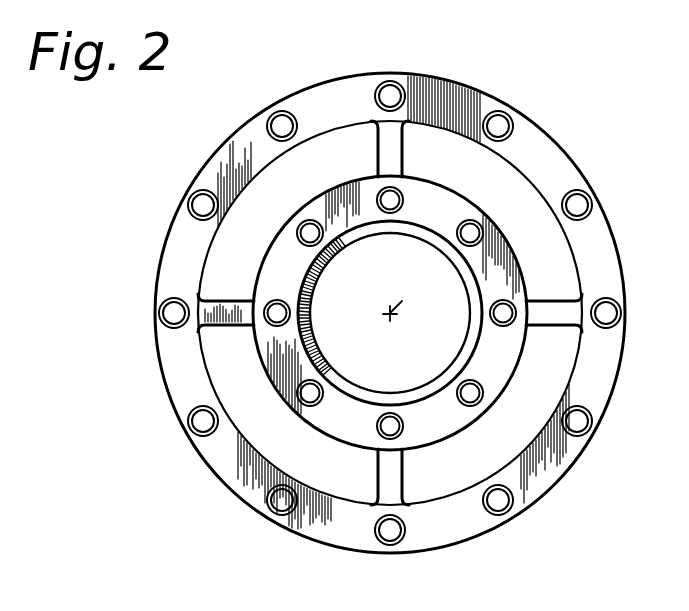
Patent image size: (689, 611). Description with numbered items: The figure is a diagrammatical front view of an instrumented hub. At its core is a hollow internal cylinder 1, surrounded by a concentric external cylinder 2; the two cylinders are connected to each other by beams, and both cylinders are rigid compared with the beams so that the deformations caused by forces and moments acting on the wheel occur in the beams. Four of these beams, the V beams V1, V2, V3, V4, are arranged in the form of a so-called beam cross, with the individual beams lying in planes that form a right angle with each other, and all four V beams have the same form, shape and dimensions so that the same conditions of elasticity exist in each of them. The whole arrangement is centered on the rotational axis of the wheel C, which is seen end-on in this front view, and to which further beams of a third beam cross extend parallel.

The hollow internal cylinder 1 is at (500, 371).
The concentric external cylinder 2 is at (545, 134).
The V beam V1 is at (402, 162).
The V beam V2 is at (387, 480).
The V beam V3 is at (570, 301).
The V beam V4 is at (248, 301).
The rotational axis of wheel C is at (401, 302).